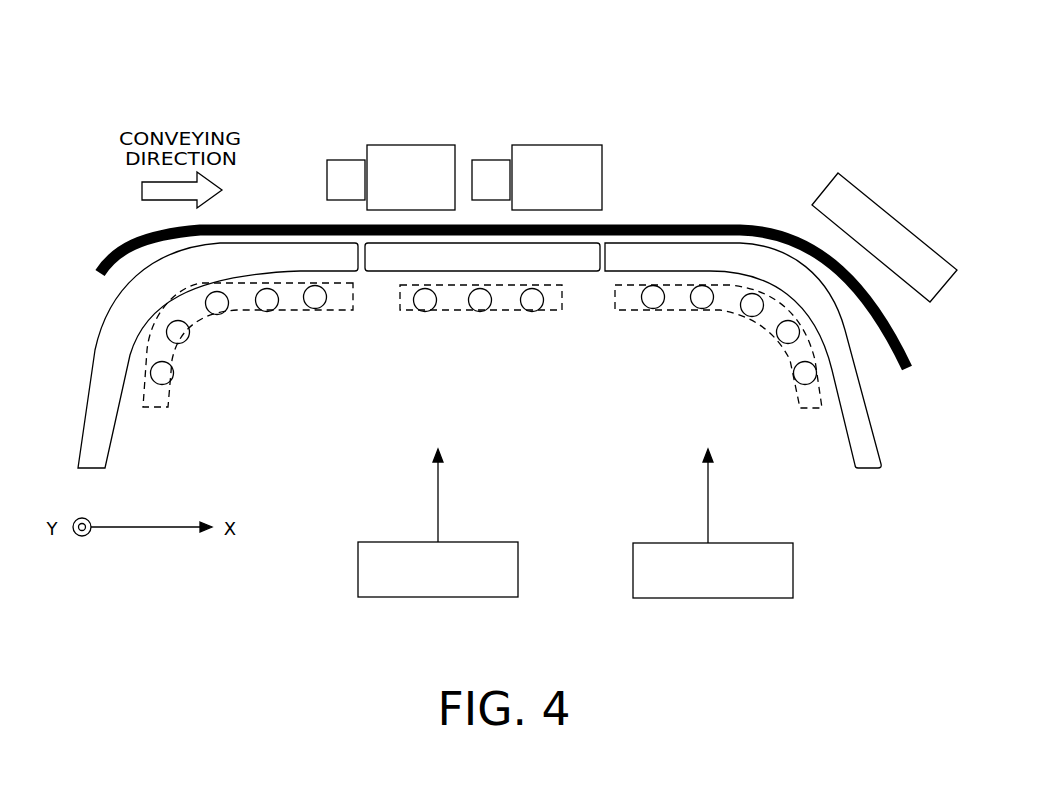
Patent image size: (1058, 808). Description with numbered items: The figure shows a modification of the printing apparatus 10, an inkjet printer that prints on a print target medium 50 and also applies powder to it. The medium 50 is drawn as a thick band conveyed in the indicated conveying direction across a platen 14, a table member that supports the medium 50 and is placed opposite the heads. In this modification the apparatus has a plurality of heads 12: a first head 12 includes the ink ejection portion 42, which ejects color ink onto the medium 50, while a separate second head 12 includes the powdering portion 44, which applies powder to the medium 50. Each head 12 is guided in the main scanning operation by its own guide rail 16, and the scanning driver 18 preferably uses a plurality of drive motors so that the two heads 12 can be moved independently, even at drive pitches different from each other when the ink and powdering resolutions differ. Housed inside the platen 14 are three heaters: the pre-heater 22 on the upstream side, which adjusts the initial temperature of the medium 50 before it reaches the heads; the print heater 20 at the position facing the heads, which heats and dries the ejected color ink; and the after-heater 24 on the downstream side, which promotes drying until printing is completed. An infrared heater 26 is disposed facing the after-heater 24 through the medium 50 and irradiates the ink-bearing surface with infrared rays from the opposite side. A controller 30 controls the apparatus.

The printing apparatus 10 is at (88, 145).
The head 12 is at (488, 112).
The platen 14 is at (583, 263).
The guide rail 16 is at (333, 160).
The scanning driver 18 is at (793, 582).
The print heater 20 is at (412, 313).
The pre-heater 22 is at (167, 402).
The after-heater 24 is at (802, 417).
The infrared heater 26 is at (860, 188).
The controller 30 is at (355, 583).
The ink ejection portion 42 is at (403, 145).
The powdering portion 44 is at (558, 147).
The medium 50 is at (275, 223).